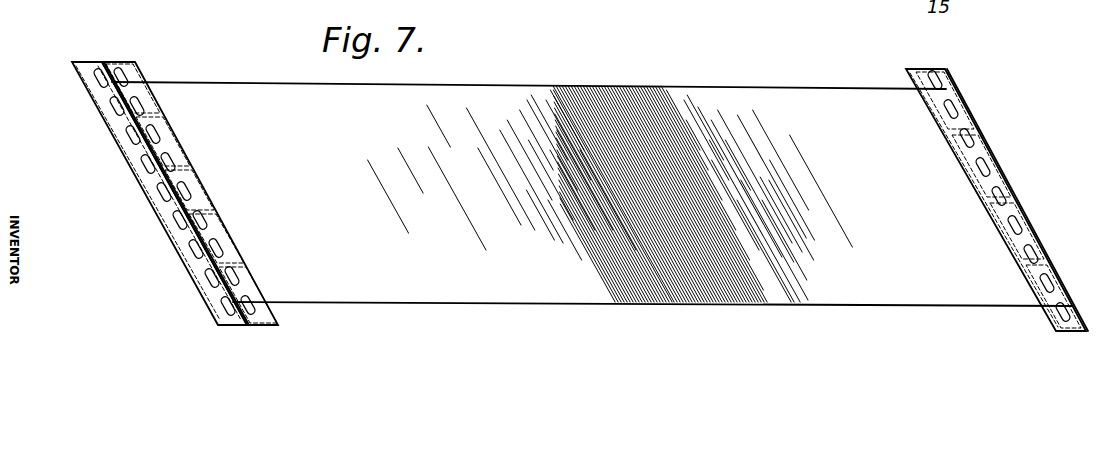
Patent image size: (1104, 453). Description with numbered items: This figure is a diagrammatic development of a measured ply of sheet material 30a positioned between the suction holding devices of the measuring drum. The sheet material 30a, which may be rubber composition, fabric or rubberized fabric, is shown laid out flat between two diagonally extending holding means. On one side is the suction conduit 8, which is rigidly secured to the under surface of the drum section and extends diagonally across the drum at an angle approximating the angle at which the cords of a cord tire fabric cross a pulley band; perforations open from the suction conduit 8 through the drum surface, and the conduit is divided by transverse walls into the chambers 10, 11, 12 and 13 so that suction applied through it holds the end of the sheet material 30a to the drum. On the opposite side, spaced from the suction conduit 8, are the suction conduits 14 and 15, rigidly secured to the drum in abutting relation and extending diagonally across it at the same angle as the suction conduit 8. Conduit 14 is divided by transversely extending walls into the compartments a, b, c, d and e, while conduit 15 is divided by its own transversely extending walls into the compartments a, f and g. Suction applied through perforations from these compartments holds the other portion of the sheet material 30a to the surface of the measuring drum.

The sheet material 30a is at (682, 89).
The suction conduit 15 is at (154, 178).
The suction conduit 14 is at (199, 179).
The suction conduit 8 is at (1002, 191).
The chamber 13 is at (952, 102).
The chamber 12 is at (988, 160).
The chamber 11 is at (1027, 227).
The chamber 10 is at (1073, 308).
The compartment g is at (107, 105).
The compartment f is at (207, 292).
The compartment e is at (147, 100).
The compartment d is at (168, 145).
The compartment a is at (200, 190).
The compartment c is at (220, 240).
The compartment b is at (275, 315).